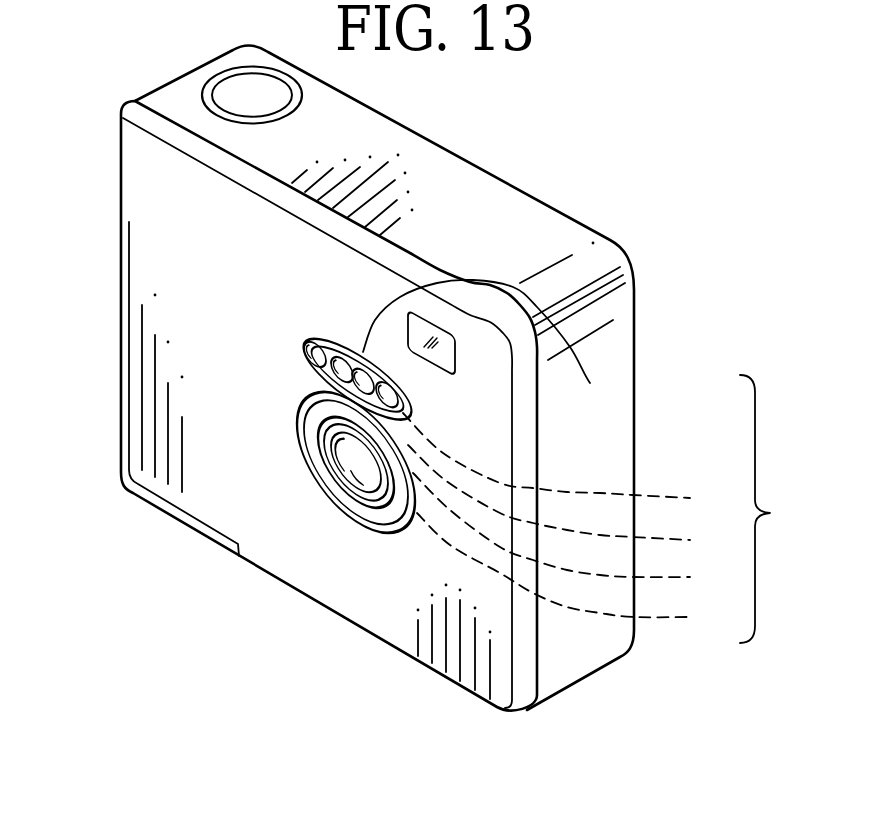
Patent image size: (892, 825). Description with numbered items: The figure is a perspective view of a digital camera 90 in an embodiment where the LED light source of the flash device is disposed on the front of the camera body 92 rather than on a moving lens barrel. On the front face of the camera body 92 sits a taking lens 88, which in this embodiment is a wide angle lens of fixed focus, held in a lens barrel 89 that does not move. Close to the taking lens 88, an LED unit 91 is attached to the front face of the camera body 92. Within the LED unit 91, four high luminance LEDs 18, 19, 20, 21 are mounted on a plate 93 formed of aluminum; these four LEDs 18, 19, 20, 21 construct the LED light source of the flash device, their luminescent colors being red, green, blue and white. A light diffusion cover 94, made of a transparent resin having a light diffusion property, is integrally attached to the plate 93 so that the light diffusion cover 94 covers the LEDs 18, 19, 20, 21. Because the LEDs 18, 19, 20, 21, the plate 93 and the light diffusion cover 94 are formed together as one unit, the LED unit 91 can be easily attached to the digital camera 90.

The digital camera 90 is at (613, 231).
The camera body 92 is at (362, 628).
The taking lens 88 is at (337, 453).
The lens barrel 89 is at (333, 509).
The plate 93 is at (411, 389).
The light diffusion cover 94 is at (590, 383).
The LED unit 91 is at (773, 509).
The LED 18 is at (572, 573).
The LED 19 is at (570, 533).
The LED 20 is at (568, 499).
The LED 21 is at (565, 463).